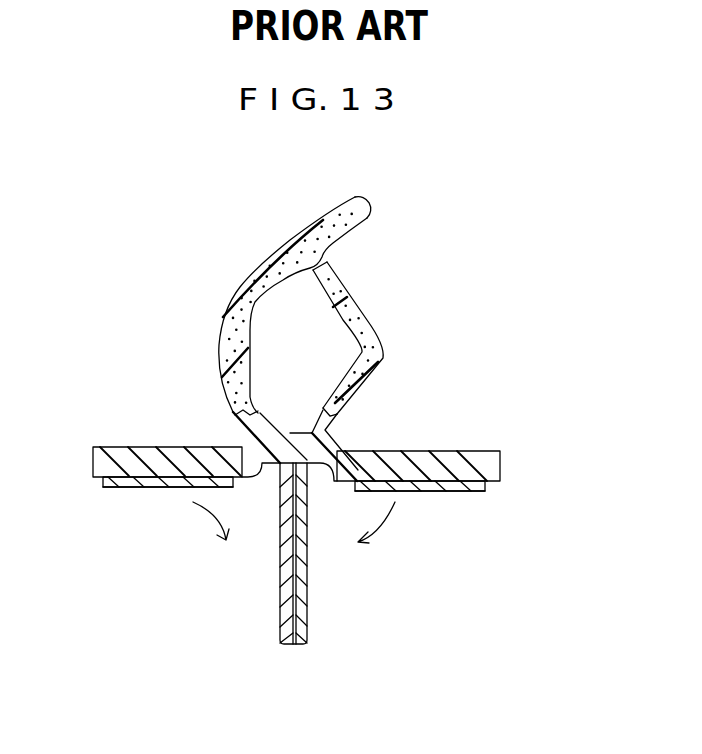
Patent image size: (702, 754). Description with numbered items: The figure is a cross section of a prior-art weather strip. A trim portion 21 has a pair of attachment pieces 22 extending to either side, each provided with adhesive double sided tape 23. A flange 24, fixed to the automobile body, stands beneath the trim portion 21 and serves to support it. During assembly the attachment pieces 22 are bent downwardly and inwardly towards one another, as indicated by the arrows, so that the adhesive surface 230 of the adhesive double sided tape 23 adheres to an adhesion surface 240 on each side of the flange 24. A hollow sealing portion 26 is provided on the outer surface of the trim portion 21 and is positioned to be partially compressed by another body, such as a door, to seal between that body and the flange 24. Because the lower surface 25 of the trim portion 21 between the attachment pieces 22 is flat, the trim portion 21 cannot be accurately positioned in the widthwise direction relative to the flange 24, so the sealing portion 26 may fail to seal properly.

The trim portion 21 is at (303, 415).
The attachment pieces 22 is at (117, 447).
The adhesive double sided tape 23 is at (302, 527).
The adhesive surface 230 is at (128, 488).
The flange 24 is at (296, 587).
The adhesion surface 240 is at (308, 590).
The lower surface 25 is at (270, 518).
The hollow sealing portion 26 is at (357, 306).